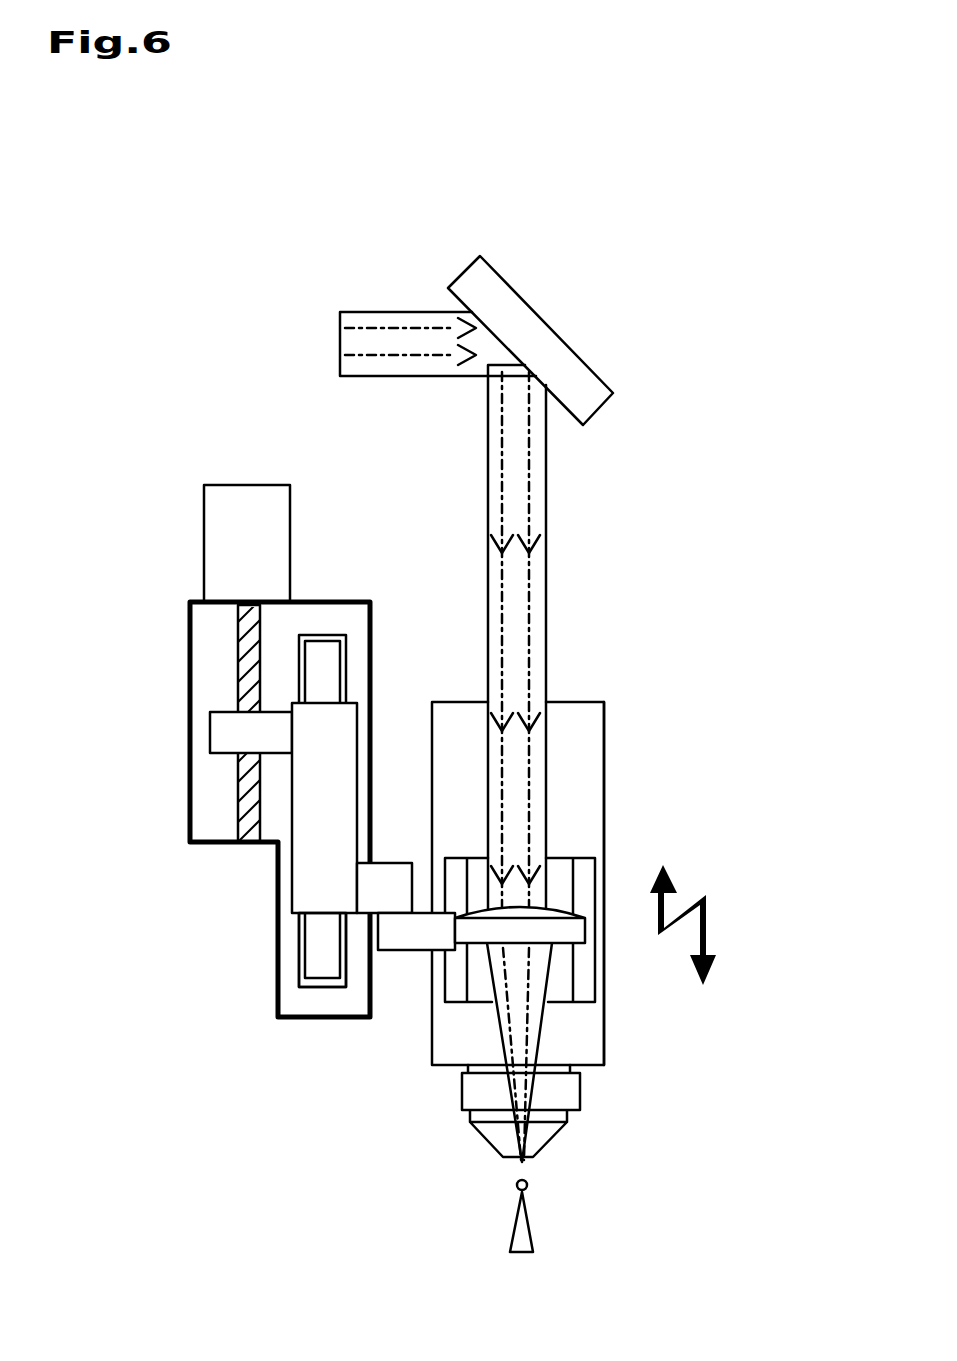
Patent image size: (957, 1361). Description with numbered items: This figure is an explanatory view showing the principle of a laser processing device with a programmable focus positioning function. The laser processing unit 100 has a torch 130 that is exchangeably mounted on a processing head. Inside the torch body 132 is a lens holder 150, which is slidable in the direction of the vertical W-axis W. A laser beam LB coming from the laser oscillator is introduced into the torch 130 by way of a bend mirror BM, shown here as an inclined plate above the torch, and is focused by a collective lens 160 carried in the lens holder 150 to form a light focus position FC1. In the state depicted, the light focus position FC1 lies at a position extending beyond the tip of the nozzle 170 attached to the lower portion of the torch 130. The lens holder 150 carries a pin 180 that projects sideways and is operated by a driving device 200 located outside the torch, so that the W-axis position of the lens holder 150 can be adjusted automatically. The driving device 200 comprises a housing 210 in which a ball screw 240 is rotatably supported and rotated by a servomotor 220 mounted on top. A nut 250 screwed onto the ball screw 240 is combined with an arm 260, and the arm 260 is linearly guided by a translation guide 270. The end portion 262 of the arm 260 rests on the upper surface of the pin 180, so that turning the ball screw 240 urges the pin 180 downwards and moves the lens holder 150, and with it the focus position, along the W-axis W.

The laser processing unit 100 is at (655, 539).
The torch 130 is at (690, 722).
The torch body 132 is at (604, 735).
The lens holder 150 is at (585, 968).
The collective lens 160 is at (556, 925).
The nozzle 170 is at (543, 1135).
The pin 180 is at (398, 937).
The driving device 200 is at (136, 466).
The housing 210 is at (192, 650).
The servomotor 220 is at (215, 558).
The ball screw 240 is at (240, 677).
The nut 250 is at (217, 740).
The arm 260 is at (307, 891).
The end portion 262 is at (362, 898).
The translation guide 270 is at (318, 963).
The bend mirror BM is at (513, 312).
The laser beam LB is at (530, 620).
The light focus position FC1 is at (517, 1190).
The W-axis W is at (709, 925).